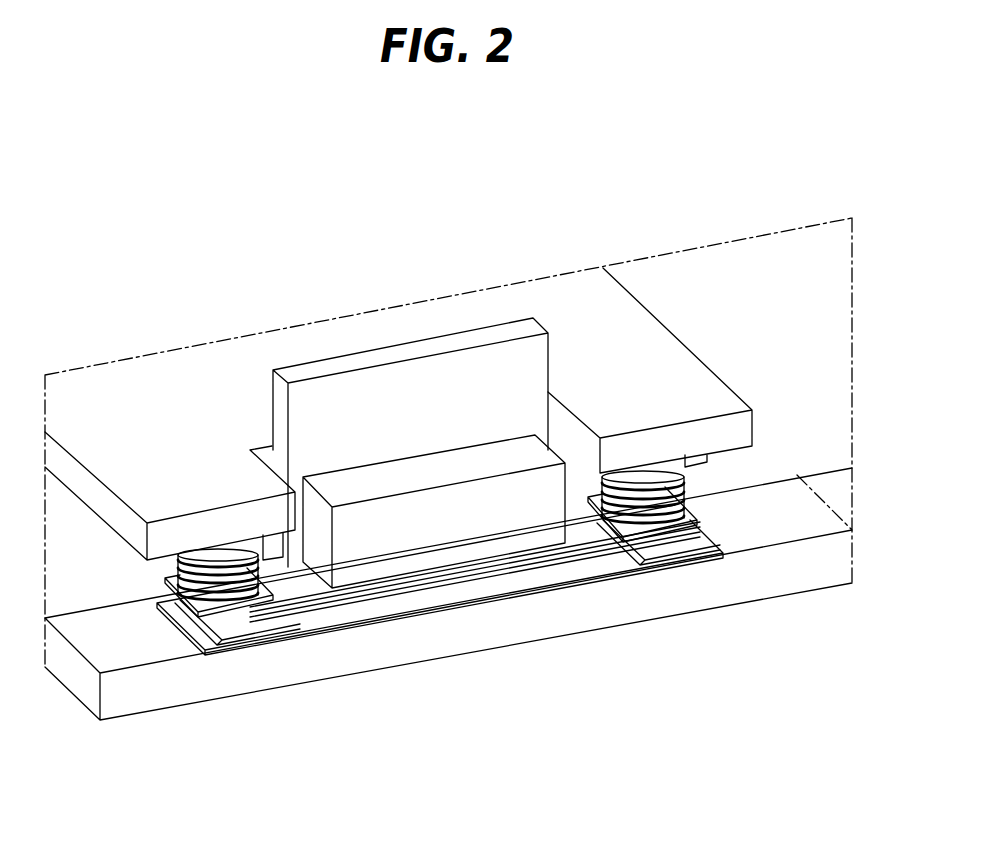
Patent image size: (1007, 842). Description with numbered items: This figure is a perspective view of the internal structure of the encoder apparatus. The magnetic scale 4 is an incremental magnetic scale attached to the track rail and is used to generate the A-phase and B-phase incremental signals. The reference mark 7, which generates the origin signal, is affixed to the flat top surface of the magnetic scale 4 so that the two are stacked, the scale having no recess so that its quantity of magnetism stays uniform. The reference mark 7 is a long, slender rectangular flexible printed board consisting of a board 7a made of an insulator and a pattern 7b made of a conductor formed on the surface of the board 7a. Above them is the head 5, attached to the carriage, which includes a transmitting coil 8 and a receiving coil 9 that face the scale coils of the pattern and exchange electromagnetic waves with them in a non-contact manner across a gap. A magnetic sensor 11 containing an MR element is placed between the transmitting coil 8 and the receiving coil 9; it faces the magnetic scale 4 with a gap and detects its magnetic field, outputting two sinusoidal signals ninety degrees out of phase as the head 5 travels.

The magnetic scale 4 is at (338, 660).
The head 5 is at (362, 310).
The reference mark 7 is at (428, 597).
The board 7a is at (505, 583).
The pattern 7b is at (597, 558).
The transmitting coil 8 is at (232, 560).
The receiving coil 9 is at (655, 493).
The magnetic sensor 11 is at (469, 508).